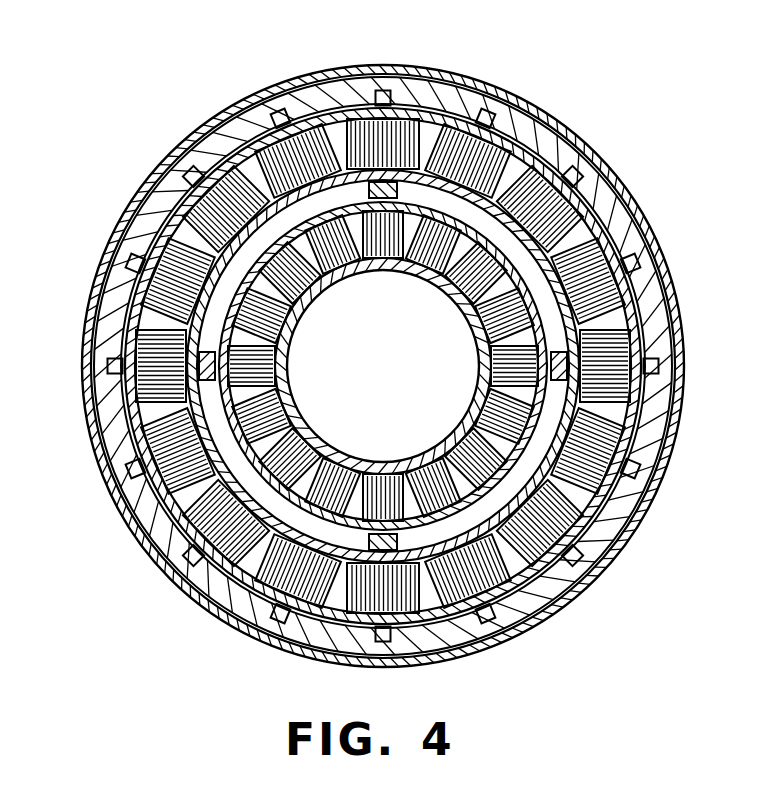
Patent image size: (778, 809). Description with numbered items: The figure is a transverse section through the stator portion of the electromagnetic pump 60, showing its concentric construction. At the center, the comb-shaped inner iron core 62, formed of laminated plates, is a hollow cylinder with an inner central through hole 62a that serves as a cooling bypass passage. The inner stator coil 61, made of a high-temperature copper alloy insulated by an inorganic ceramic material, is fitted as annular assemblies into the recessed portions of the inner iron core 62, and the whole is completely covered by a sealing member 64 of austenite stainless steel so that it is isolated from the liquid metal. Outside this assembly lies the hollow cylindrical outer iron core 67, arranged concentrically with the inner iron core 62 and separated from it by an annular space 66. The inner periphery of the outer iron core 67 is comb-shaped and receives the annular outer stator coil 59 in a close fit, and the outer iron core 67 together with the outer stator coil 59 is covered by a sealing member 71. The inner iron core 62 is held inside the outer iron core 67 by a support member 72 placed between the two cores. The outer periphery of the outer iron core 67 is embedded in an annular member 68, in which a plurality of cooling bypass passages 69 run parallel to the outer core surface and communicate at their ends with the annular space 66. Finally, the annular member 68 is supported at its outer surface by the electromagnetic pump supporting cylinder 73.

The outer stator coil 59 is at (247, 108).
The motor 60 is at (526, 92).
The inner stator coil 61 is at (387, 465).
The inner iron core 62 is at (457, 438).
The through hole 62a is at (410, 345).
The sealing member 64 is at (328, 446).
The annular space 66 is at (600, 215).
The outer iron core 67 is at (615, 300).
The annular member 68 is at (612, 548).
The cooling bypass passages 69 is at (138, 258).
The sealing member 71 is at (195, 600).
The support member 72 is at (381, 172).
The electromagnetic pump supporting cylinder 73 is at (662, 458).